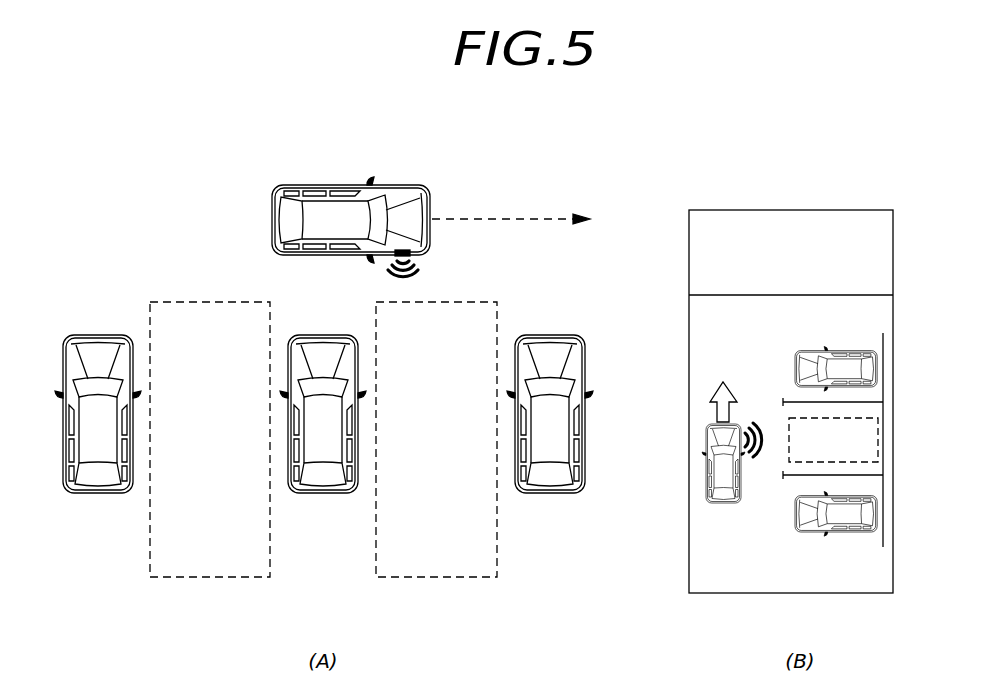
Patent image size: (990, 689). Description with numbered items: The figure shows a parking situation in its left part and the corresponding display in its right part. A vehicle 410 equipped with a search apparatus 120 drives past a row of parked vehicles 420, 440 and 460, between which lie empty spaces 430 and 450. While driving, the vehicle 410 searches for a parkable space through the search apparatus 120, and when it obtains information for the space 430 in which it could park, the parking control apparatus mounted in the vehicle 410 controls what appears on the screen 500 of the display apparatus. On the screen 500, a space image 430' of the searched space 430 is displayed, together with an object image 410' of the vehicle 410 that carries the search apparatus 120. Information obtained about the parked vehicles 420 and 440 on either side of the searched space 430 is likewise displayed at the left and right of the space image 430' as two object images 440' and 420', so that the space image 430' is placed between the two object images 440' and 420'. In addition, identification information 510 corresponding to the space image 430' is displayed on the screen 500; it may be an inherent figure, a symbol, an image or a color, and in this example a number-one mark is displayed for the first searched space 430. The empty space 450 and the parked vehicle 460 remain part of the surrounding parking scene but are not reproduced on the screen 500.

The vehicle 410 is at (431, 197).
The search apparatus 120 is at (413, 257).
The parked vehicle 420 is at (98, 444).
The space 430 is at (214, 469).
The parked vehicle 440 is at (323, 444).
The empty space 450 is at (472, 578).
The parked vehicle 460 is at (535, 494).
The screen 500 is at (840, 210).
The identification information 510 is at (850, 318).
The object image 410' is at (699, 442).
The object image 420' is at (870, 548).
The space image 430' is at (869, 440).
The object image 440' is at (872, 368).